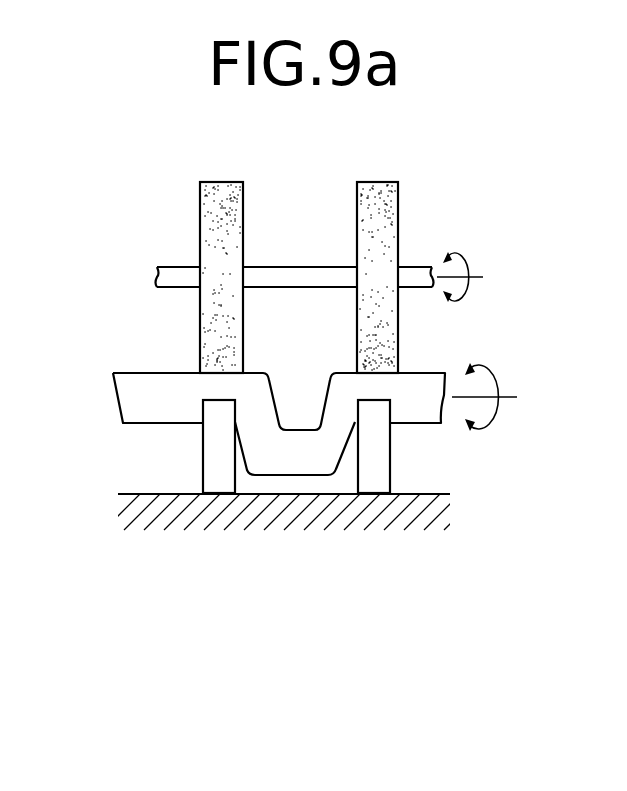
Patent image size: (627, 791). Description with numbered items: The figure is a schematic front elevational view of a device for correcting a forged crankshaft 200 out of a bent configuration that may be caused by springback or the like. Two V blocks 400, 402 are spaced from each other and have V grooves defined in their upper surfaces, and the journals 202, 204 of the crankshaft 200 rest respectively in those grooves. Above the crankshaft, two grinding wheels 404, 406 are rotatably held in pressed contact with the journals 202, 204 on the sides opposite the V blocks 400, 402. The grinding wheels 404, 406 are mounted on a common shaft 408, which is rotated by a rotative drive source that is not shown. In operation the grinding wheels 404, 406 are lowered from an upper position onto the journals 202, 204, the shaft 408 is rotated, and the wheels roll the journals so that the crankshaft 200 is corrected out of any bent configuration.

The crankshaft 200 is at (432, 369).
The journal 202 is at (213, 388).
The journal 204 is at (373, 385).
The V block 400 is at (225, 480).
The V block 402 is at (377, 480).
The grinding wheel 404 is at (232, 202).
The grinding wheel 406 is at (393, 200).
The shaft 408 is at (300, 283).